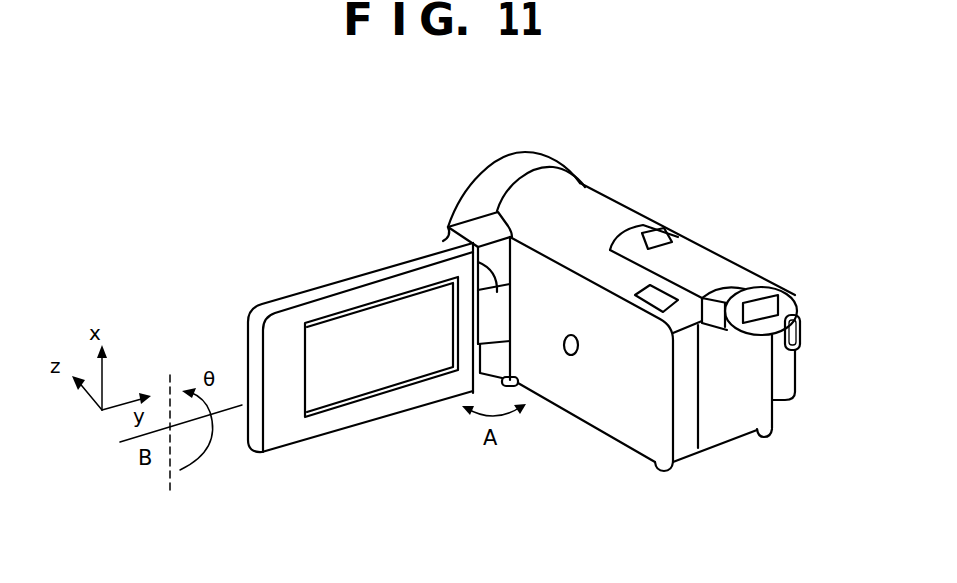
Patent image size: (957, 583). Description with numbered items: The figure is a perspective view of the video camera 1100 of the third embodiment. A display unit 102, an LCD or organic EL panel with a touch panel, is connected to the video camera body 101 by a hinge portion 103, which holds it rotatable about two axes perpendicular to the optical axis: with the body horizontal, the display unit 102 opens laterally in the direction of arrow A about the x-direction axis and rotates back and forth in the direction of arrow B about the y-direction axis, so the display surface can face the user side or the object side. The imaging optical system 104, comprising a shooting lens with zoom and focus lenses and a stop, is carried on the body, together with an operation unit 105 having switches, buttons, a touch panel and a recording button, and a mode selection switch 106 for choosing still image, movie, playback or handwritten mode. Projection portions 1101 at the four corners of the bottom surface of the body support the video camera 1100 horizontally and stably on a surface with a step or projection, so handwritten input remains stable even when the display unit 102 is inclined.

The video camera 1100 is at (613, 157).
The video camera body 101 is at (617, 430).
The display unit 102 is at (352, 283).
The hinge portion 103 is at (448, 227).
The imaging optical system 104 is at (498, 166).
The operation unit 105 is at (802, 315).
The mode selection switch 106 is at (571, 355).
The projection portions 1101 is at (662, 472).